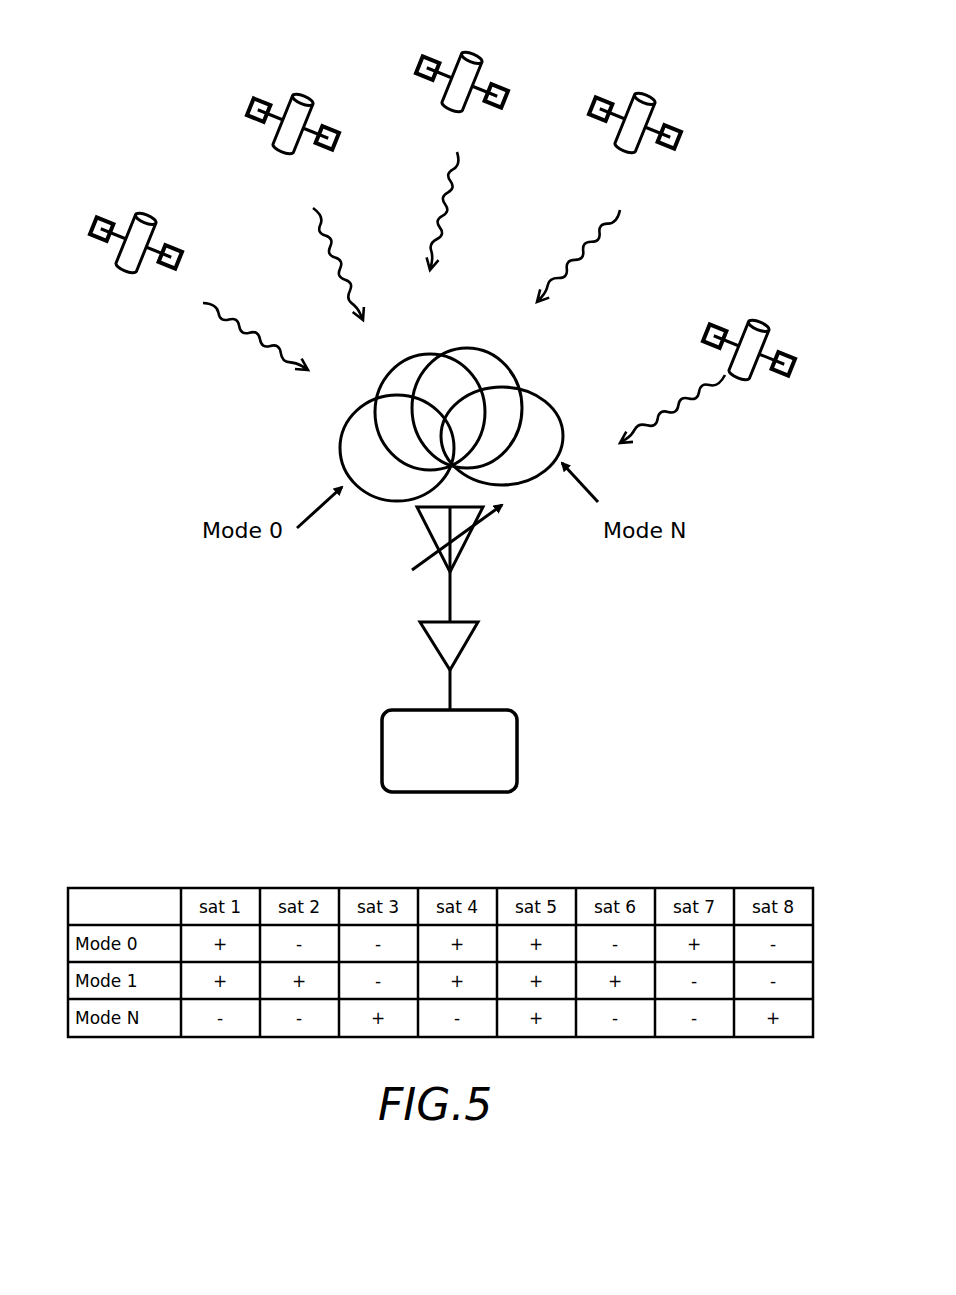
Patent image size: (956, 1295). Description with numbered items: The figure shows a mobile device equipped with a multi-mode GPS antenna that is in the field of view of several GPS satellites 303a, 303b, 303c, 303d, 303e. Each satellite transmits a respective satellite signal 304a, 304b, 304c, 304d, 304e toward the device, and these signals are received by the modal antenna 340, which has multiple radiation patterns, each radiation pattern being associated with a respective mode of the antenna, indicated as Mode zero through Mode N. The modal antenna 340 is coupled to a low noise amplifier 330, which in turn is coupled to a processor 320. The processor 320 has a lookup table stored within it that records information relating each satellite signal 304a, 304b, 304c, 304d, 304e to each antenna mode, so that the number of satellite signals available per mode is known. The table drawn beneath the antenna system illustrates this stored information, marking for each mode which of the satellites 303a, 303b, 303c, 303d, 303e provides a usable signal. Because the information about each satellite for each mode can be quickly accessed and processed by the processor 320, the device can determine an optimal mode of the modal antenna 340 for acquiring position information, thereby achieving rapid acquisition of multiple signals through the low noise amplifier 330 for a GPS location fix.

The GPS satellite 303a is at (148, 212).
The GPS satellite 303b is at (302, 95).
The GPS satellite 303c is at (475, 55).
The GPS satellite 303d is at (652, 95).
The GPS satellite 303e is at (765, 325).
The satellite signal 304a is at (262, 327).
The satellite signal 304b is at (337, 233).
The satellite signal 304c is at (462, 188).
The satellite signal 304d is at (602, 242).
The satellite signal 304e is at (662, 415).
The modal antenna 340 is at (470, 533).
The low noise amplifier 330 is at (463, 648).
The processor 320 is at (517, 760).